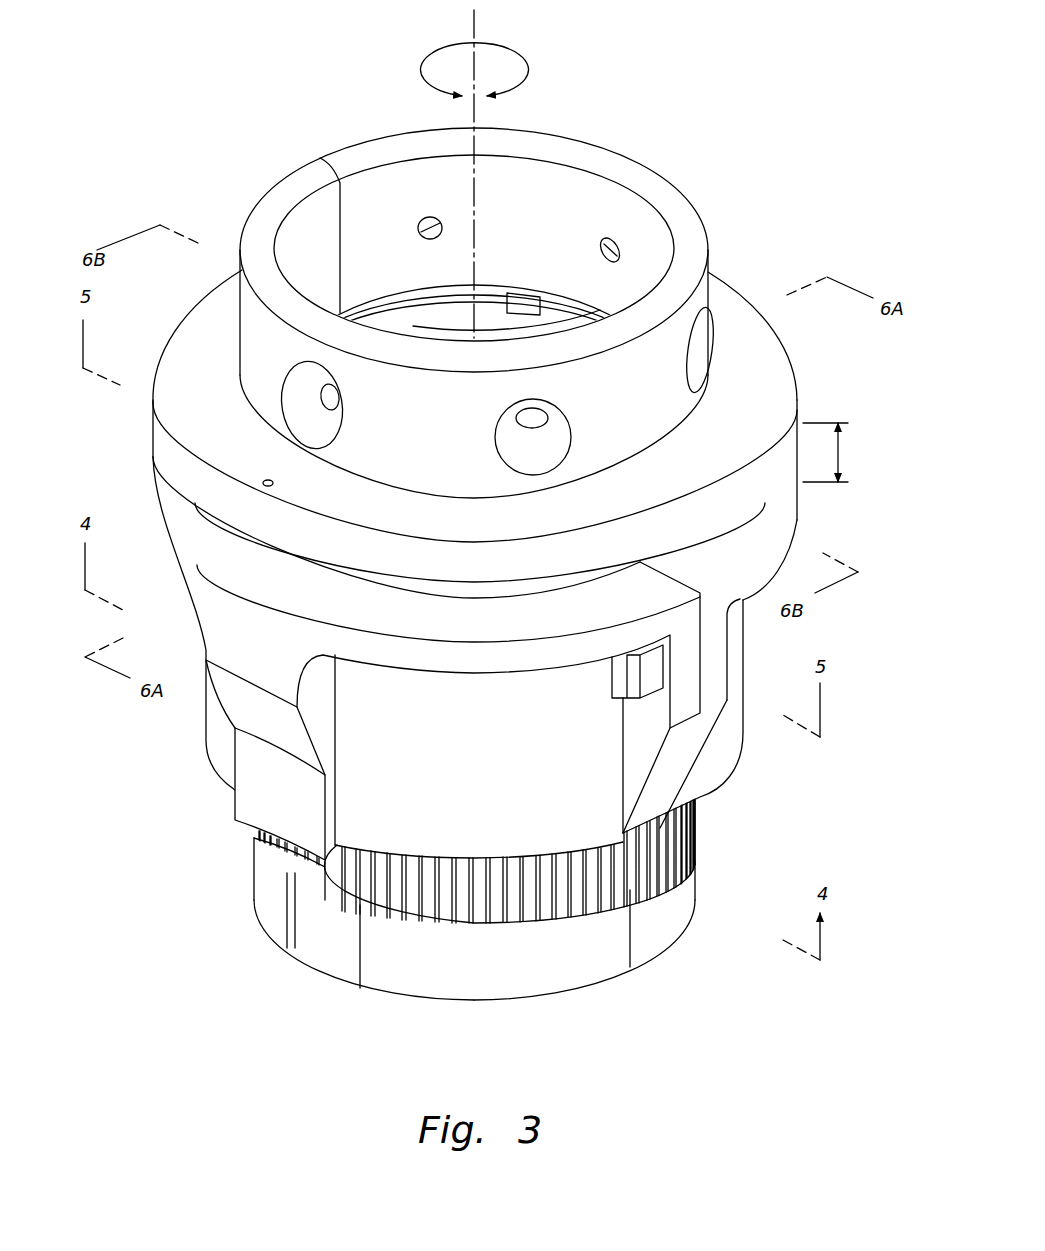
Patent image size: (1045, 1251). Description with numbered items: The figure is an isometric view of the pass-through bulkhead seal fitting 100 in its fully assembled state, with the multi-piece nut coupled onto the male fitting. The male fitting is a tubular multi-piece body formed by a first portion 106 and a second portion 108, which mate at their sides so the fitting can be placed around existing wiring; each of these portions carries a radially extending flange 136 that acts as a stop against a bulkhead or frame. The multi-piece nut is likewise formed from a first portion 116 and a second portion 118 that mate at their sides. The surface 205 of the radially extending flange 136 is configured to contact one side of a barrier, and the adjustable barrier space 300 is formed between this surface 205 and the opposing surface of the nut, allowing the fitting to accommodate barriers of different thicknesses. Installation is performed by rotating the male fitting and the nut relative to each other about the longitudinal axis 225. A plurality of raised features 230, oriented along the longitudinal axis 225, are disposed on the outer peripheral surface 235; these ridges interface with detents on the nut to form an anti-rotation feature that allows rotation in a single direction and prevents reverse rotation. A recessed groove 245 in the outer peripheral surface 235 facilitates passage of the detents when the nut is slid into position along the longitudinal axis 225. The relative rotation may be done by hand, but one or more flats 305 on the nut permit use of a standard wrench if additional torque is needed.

The pass-through bulkhead seal fitting 100 is at (672, 103).
The first portion 106 is at (188, 332).
The second portion 108 is at (735, 292).
The first portion 116 is at (192, 597).
The second portion 118 is at (747, 638).
The radially extending flange 136 is at (782, 327).
The surface 205 is at (193, 505).
The longitudinal axis 225 is at (476, 22).
The raised features 230 is at (657, 847).
The outer peripheral surface 235 is at (670, 923).
The recessed groove 245 is at (327, 943).
The adjustable barrier space 300 is at (848, 452).
The flats 305 is at (325, 725).